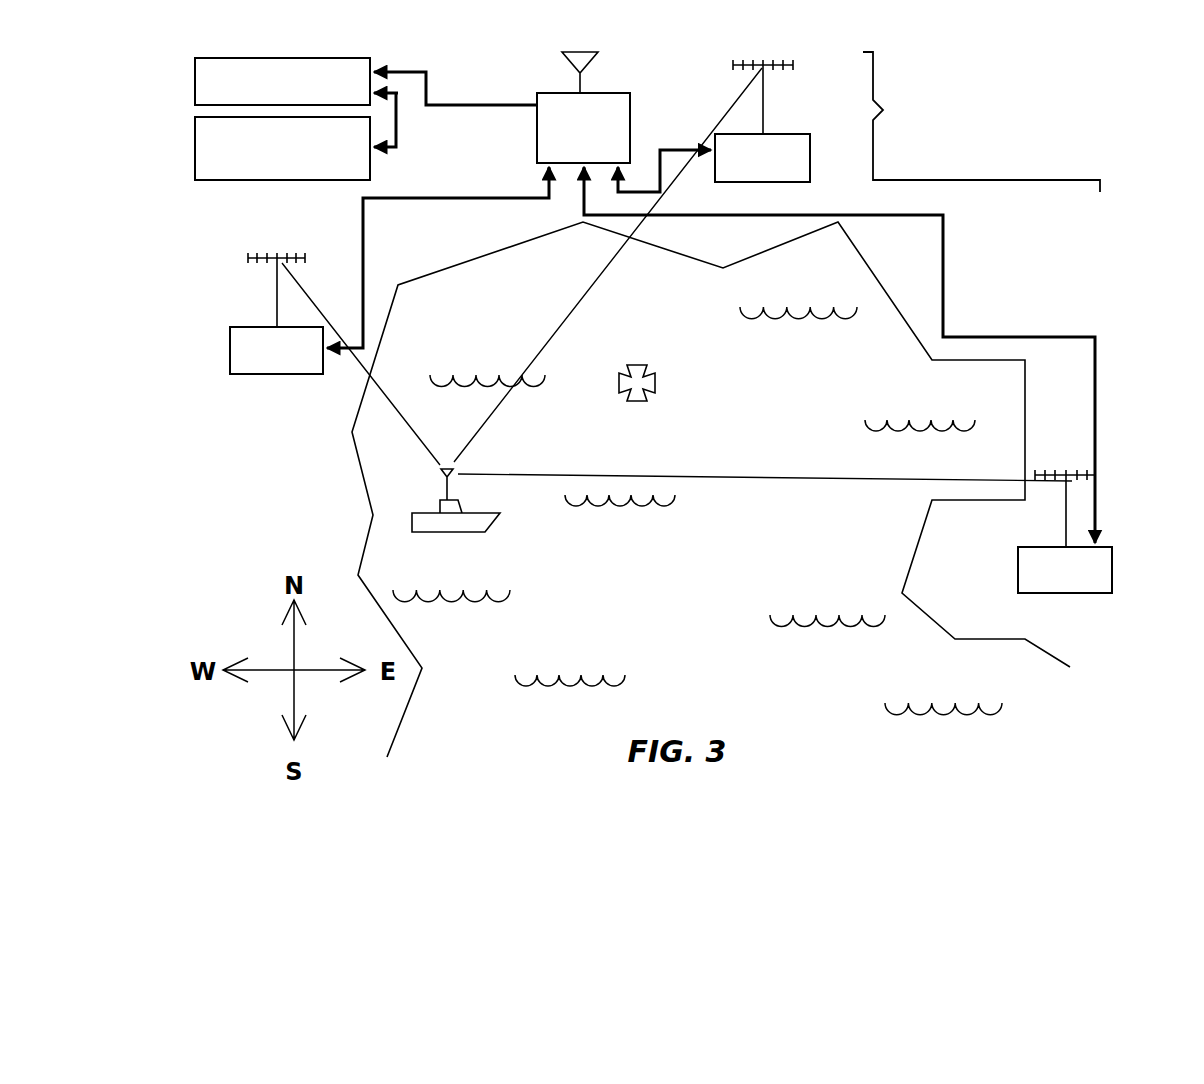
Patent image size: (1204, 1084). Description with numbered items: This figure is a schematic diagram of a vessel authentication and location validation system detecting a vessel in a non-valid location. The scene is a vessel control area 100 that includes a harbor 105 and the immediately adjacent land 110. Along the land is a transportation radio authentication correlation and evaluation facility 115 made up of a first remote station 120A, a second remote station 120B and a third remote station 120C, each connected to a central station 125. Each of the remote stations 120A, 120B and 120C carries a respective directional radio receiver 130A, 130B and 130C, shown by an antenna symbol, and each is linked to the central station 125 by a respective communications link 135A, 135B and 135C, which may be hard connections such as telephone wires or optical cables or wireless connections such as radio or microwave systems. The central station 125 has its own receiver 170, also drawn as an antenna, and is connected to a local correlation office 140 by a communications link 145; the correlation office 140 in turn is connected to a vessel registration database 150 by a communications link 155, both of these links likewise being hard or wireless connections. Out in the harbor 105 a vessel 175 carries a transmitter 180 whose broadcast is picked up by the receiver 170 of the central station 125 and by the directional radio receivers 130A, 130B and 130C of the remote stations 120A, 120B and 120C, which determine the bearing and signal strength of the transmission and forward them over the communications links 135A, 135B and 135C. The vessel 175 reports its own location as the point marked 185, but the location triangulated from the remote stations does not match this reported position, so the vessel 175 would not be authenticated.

The vessel control area 100 is at (1014, 130).
The harbor 105 is at (697, 511).
The land 110 is at (695, 489).
The transportation radio authentication correlation and evaluation (TRACE) facility 115 is at (981, 122).
The first remote station 120A is at (229, 345).
The second remote station 120B is at (812, 152).
The third remote station 120C is at (1113, 565).
The central station 125 is at (632, 108).
The directional radio receiver 130A is at (274, 305).
The directional radio receiver 130B is at (774, 104).
The directional radio receiver 130C is at (1065, 520).
The communications link 135A is at (420, 197).
The communications link 135B is at (676, 149).
The communications link 135C is at (1028, 336).
The local correlation office 140 is at (282, 81).
The communications link 145 is at (446, 104).
The vessel registration database 150 is at (282, 148).
The communications link 155 is at (399, 118).
The receiver 170 is at (578, 84).
The vessel 175 is at (470, 525).
The transmitter 180 is at (443, 490).
The reported location 185 is at (656, 383).